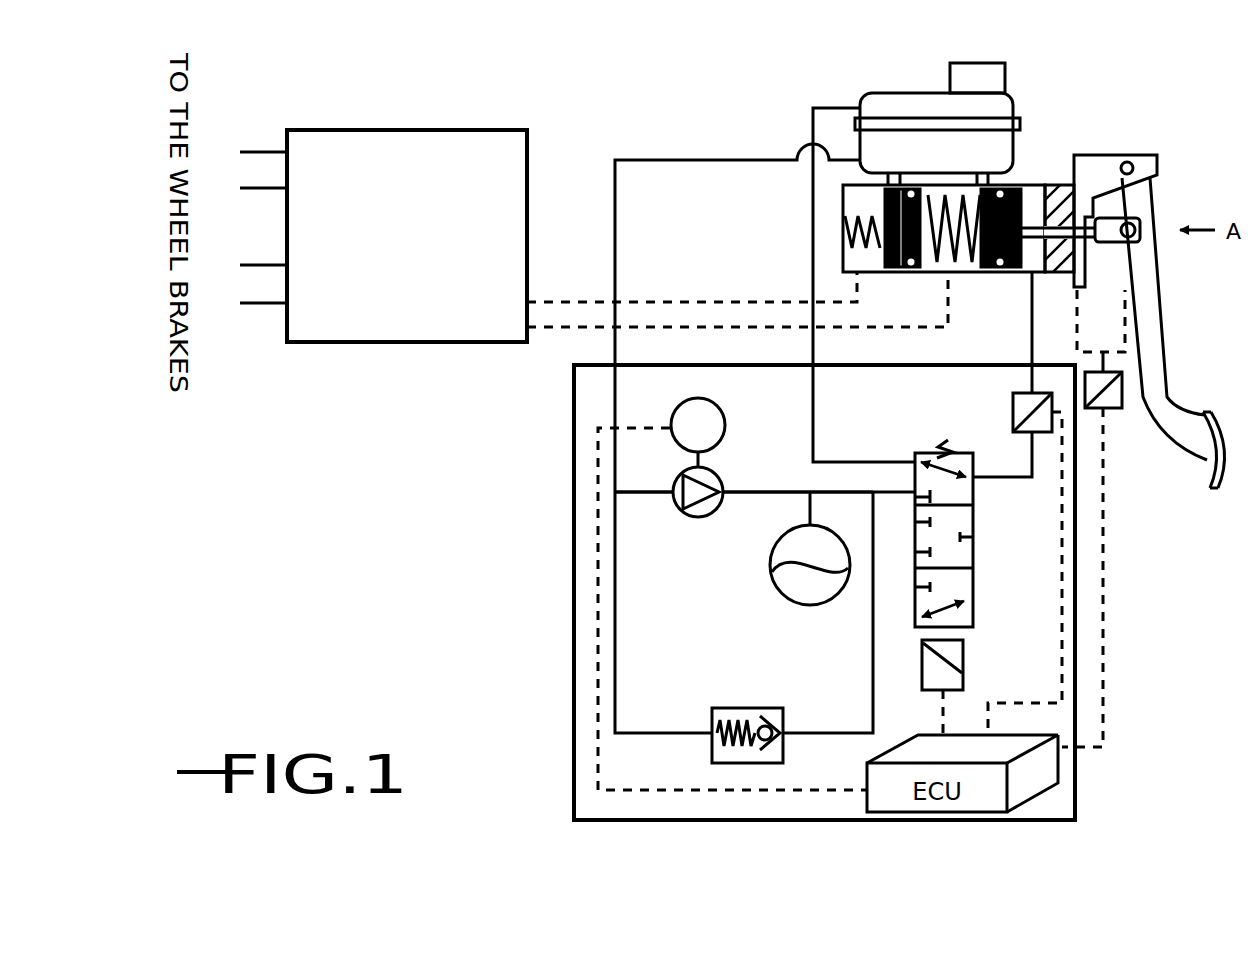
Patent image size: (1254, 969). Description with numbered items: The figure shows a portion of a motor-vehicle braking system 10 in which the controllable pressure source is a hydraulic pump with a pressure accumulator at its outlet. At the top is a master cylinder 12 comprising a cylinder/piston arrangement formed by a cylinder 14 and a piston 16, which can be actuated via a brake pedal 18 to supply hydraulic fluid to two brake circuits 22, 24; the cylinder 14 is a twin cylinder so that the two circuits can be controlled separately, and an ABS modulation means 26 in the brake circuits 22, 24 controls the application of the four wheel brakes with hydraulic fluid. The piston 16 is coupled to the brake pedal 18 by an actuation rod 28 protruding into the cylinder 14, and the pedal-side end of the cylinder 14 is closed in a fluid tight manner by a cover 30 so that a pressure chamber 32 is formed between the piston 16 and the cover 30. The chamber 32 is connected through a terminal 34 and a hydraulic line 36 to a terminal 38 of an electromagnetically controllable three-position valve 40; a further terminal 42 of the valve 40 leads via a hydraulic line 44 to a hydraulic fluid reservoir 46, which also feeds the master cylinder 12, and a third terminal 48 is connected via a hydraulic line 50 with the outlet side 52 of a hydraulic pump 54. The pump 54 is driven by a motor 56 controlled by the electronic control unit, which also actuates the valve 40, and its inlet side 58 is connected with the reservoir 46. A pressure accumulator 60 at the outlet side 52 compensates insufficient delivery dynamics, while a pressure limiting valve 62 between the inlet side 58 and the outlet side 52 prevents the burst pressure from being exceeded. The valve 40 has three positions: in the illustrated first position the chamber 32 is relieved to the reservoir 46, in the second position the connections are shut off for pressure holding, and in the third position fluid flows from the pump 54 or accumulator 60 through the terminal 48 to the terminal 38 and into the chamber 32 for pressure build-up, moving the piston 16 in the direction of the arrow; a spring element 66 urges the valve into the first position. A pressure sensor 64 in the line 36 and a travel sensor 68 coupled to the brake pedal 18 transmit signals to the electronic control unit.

The braking system 10 is at (1136, 595).
The master cylinder 12 is at (1039, 162).
The cylinder 14 is at (960, 273).
The piston 16 is at (981, 230).
The brake pedal 18 is at (1148, 315).
The brake circuit 22 is at (545, 298).
The brake circuit 24 is at (563, 333).
The ABS modulation means 26 is at (387, 343).
The actuation rod 28 is at (1106, 195).
The cover 30 is at (1057, 182).
The pressure chamber 32 is at (1036, 272).
The terminal 34 is at (1030, 277).
The hydraulic line 36 is at (1023, 357).
The terminal 38 is at (983, 480).
The 3/2-way valve 40 is at (975, 547).
The terminal 42 is at (917, 465).
The hydraulic line 44 is at (815, 412).
The hydraulic fluid reservoir 46 is at (913, 105).
The terminal 48 is at (915, 497).
The hydraulic line 50 is at (820, 492).
The outlet side 52 is at (723, 492).
The hydraulic pump 54 is at (672, 500).
The motor 56 is at (715, 415).
The inlet side 58 is at (672, 492).
The pressure accumulator 60 is at (813, 537).
The pressure limiting valve 62 is at (787, 717).
The pressure sensor 64 is at (1013, 418).
The spring element 66 is at (948, 440).
The travel sensor 68 is at (1120, 410).